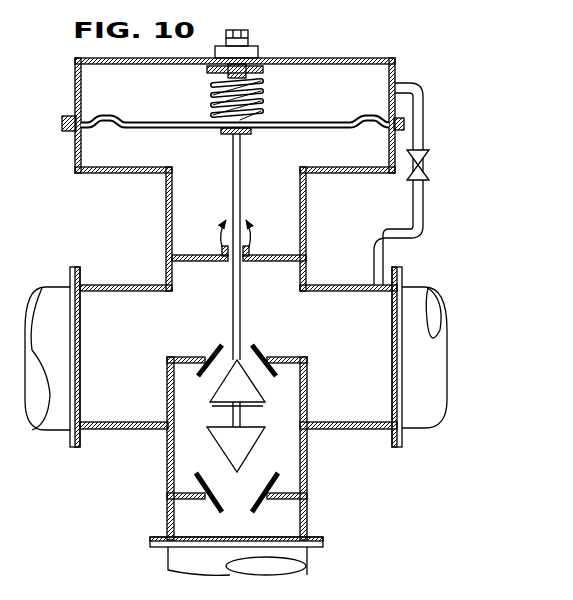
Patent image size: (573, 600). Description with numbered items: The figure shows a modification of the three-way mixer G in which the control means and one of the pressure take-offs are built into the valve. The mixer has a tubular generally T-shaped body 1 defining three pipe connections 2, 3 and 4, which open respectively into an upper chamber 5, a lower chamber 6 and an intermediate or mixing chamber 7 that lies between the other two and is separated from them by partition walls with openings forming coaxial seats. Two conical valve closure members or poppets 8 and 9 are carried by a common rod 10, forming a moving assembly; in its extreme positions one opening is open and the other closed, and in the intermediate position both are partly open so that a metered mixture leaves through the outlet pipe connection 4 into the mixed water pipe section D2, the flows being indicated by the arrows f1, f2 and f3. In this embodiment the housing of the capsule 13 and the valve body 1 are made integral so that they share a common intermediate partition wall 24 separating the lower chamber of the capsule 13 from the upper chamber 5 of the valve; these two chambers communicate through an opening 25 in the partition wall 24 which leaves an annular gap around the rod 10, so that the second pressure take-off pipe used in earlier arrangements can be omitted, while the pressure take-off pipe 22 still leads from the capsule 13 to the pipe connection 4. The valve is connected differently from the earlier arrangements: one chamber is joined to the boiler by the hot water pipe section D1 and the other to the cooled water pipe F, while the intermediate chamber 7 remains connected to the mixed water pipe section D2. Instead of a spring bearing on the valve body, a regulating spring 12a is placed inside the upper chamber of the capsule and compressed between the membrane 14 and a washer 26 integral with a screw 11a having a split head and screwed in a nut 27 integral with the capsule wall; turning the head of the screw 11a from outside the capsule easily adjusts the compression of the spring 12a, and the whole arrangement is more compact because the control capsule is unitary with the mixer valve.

The valve body 1 is at (172, 272).
The pipe connection 2 is at (122, 286).
The pipe connection 3 is at (170, 512).
The pipe connection 4 is at (356, 429).
The upper chamber 5 is at (183, 316).
The lower chamber 6 is at (201, 525).
The intermediate or mixing chamber 7 is at (237, 428).
The conical valve closure member 8 is at (263, 378).
The conical valve closure member 9 is at (256, 448).
The rod 10 is at (235, 192).
The screw 11a is at (248, 40).
The regulating spring 12a is at (263, 101).
The capsule 13 is at (356, 58).
The membrane 14 is at (196, 131).
The pressure take-off pipe 22 is at (412, 206).
The intermediate partition wall 24 is at (206, 257).
The opening 25 is at (248, 250).
The washer 26 is at (207, 70).
The nut 27 is at (259, 50).
The cooled water pipe F is at (50, 280).
The three-way mixer G is at (152, 441).
The hot water pipe section D1 is at (162, 555).
The mixed water pipe section D2 is at (415, 282).
The flow direction 1 f1 is at (237, 575).
The flow direction 2 f2 is at (25, 355).
The flow direction 3 f3 is at (426, 357).